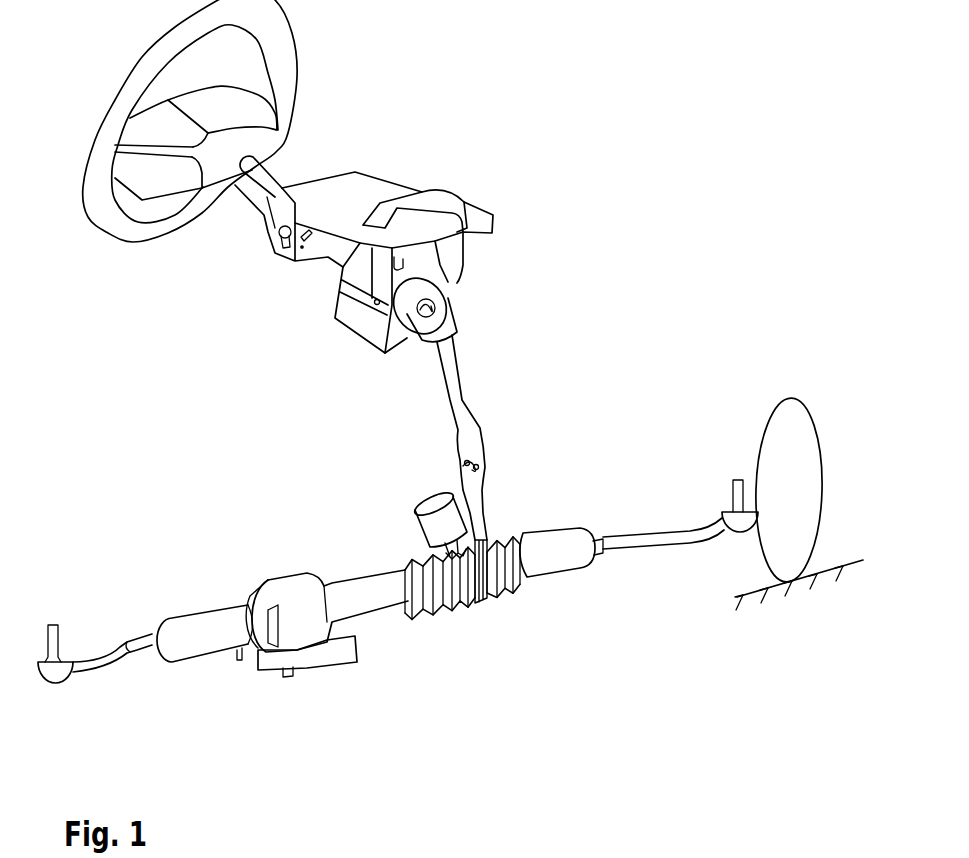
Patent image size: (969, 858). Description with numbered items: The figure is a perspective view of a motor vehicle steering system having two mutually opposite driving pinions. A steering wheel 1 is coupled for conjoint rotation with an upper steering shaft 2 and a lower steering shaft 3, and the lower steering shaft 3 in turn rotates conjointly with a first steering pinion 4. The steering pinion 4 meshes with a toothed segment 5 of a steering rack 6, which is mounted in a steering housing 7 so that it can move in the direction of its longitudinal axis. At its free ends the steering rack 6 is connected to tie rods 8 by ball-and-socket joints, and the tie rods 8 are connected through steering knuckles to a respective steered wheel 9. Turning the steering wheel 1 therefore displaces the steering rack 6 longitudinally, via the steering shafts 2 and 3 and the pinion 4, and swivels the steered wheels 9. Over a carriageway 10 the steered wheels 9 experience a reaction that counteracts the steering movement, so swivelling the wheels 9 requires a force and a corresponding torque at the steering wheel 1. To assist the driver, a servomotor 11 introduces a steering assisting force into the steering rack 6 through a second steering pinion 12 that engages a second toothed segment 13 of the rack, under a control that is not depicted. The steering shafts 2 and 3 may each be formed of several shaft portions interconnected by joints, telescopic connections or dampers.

The steering wheel 1 is at (233, 107).
The upper steering shaft 2 is at (275, 180).
The lower steering shaft 3 is at (450, 382).
The first steering pinion 4 is at (487, 547).
The toothed segment 5 is at (435, 592).
The steering rack 6 is at (403, 572).
The steering housing 7 is at (309, 598).
The tie rods 8 is at (128, 657).
The steered wheel 9 is at (773, 438).
The carriageway 10 is at (810, 580).
The servomotor 11 is at (443, 512).
The second steering pinion 12 is at (443, 544).
The second toothed segment 13 is at (503, 543).